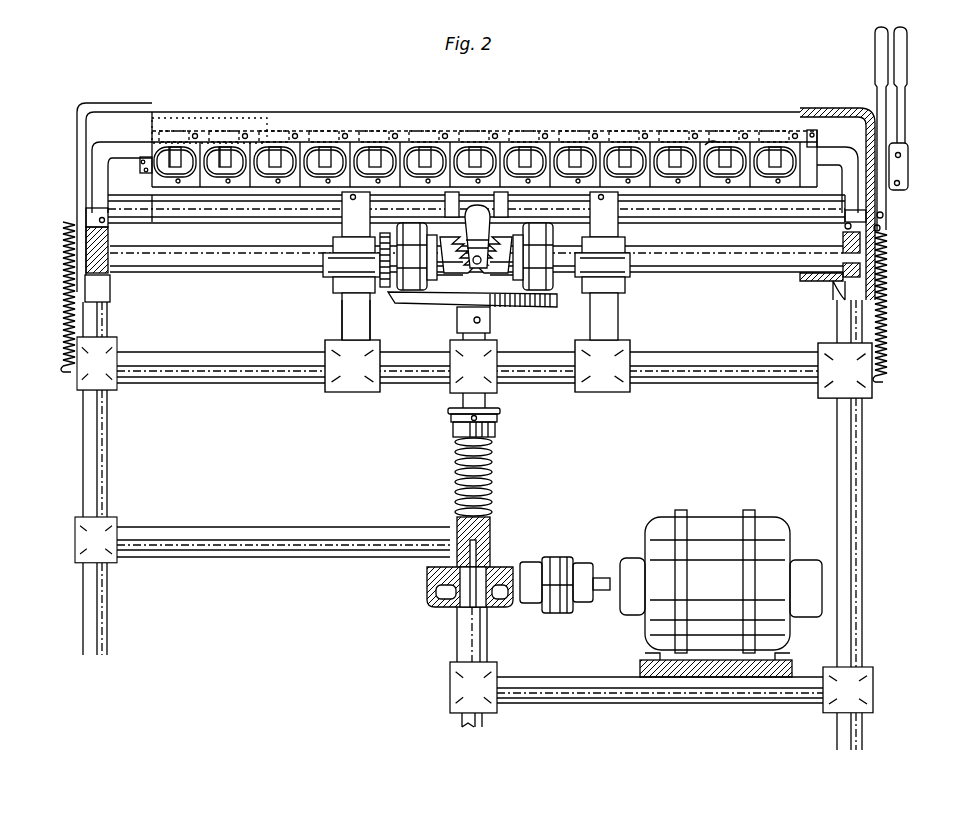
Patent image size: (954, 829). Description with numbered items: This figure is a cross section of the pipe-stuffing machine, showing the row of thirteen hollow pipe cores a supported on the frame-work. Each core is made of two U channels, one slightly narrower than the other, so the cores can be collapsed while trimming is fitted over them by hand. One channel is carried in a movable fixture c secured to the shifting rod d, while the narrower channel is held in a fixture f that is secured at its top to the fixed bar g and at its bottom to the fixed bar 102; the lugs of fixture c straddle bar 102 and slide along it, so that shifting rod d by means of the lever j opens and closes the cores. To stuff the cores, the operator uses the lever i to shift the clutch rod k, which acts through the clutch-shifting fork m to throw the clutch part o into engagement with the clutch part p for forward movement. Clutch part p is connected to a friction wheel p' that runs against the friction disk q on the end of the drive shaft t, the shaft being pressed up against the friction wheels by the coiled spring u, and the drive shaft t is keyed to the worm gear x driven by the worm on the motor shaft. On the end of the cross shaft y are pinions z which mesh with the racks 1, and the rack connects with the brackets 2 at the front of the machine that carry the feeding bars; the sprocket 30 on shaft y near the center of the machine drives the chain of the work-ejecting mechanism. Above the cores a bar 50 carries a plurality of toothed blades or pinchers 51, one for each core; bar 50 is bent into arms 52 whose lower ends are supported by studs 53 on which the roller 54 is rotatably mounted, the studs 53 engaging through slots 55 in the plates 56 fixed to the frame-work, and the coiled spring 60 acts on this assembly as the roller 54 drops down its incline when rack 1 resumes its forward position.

The bar 50 is at (180, 128).
The fixture c is at (233, 128).
The fixture f is at (285, 128).
The fixed bar g is at (335, 113).
The hollow pipe core a is at (700, 145).
The plate 56 is at (815, 112).
The lever i is at (875, 55).
The lever j is at (905, 63).
The arm 52 is at (100, 150).
The slot 55 is at (880, 200).
The roller 54 is at (86, 216).
The stud 53 is at (63, 228).
The coiled spring 60 is at (63, 292).
The rack 1 is at (845, 227).
The clutch rod k is at (708, 218).
The bracket 2 is at (843, 247).
The cross shaft y is at (678, 273).
The fixed bar 102 is at (153, 195).
The shifting rod d is at (705, 190).
The toothed blade 51 is at (141, 165).
The pinion z is at (112, 288).
The sprocket 30 is at (380, 285).
The clutch-shifting fork m is at (483, 232).
The clutch part p is at (468, 289).
The friction wheel p' is at (478, 279).
The clutch part o is at (462, 292).
The friction disk q is at (490, 312).
The coiled spring u is at (500, 412).
The drive shaft t is at (455, 472).
The worm gear x is at (435, 592).